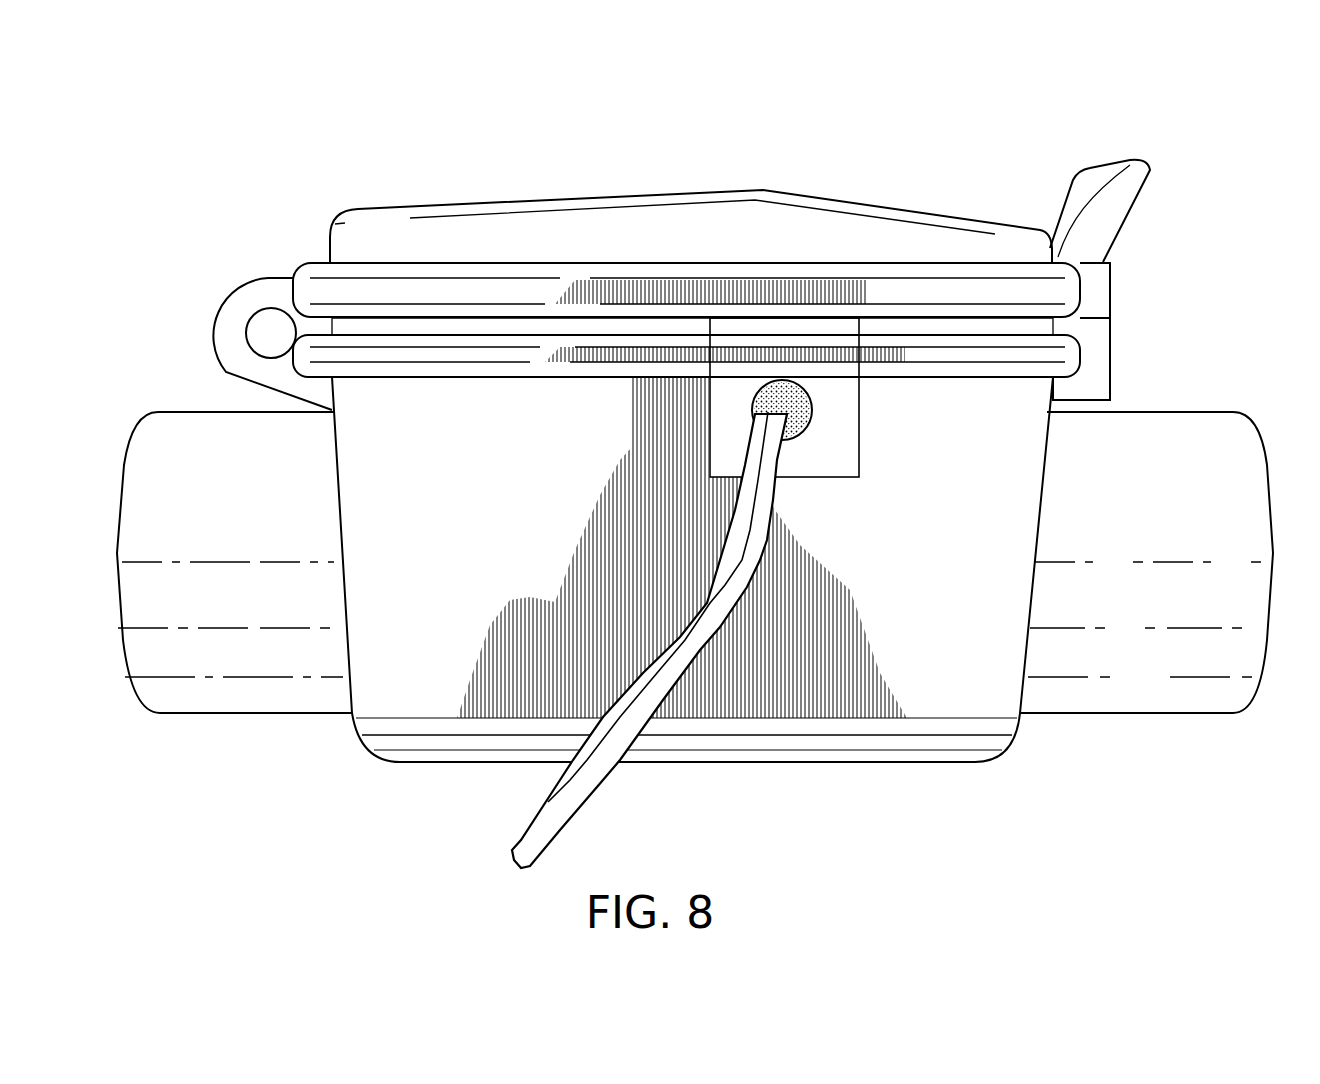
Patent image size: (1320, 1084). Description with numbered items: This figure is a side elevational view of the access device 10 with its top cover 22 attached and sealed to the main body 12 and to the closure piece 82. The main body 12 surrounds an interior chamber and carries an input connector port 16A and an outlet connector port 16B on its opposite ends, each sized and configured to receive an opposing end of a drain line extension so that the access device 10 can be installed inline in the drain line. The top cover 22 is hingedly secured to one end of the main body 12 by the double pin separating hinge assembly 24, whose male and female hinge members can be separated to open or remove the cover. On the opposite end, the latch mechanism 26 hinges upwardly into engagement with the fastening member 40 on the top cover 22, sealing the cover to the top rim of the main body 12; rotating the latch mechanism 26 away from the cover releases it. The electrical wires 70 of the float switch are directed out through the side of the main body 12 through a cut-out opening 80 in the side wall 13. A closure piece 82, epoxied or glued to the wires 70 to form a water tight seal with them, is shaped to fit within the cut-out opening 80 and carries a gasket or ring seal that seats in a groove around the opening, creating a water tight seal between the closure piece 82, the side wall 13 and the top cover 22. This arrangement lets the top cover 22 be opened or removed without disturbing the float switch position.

The access device 10 is at (469, 176).
The main body 12 is at (838, 768).
The side wall 13 is at (940, 482).
The input connector port 16A is at (1150, 690).
The outlet connector port 16B is at (243, 662).
The top cover 22 is at (786, 196).
The double pin separating hinge assembly 24 is at (276, 276).
The latch mechanism 26 is at (1106, 166).
The fastening member 40 is at (1097, 284).
The electrical wires 70 is at (750, 511).
The cut-out opening 80 is at (710, 419).
The closure piece 82 is at (880, 348).